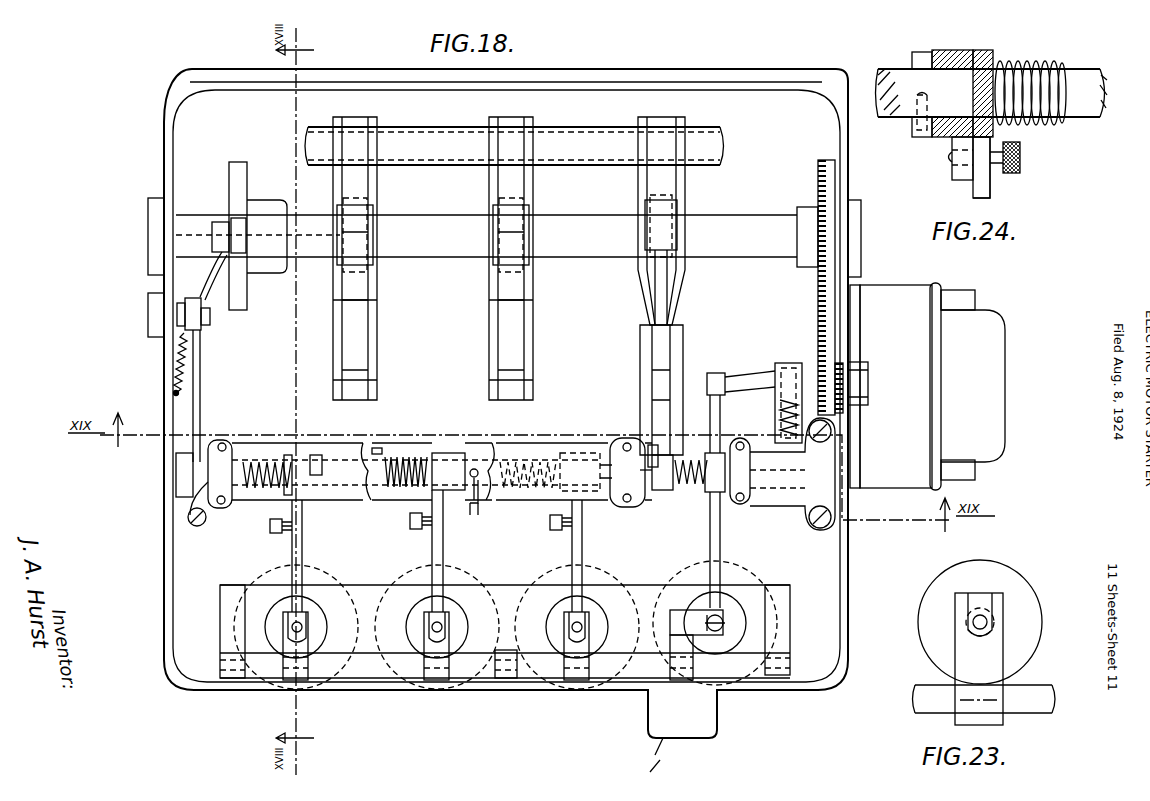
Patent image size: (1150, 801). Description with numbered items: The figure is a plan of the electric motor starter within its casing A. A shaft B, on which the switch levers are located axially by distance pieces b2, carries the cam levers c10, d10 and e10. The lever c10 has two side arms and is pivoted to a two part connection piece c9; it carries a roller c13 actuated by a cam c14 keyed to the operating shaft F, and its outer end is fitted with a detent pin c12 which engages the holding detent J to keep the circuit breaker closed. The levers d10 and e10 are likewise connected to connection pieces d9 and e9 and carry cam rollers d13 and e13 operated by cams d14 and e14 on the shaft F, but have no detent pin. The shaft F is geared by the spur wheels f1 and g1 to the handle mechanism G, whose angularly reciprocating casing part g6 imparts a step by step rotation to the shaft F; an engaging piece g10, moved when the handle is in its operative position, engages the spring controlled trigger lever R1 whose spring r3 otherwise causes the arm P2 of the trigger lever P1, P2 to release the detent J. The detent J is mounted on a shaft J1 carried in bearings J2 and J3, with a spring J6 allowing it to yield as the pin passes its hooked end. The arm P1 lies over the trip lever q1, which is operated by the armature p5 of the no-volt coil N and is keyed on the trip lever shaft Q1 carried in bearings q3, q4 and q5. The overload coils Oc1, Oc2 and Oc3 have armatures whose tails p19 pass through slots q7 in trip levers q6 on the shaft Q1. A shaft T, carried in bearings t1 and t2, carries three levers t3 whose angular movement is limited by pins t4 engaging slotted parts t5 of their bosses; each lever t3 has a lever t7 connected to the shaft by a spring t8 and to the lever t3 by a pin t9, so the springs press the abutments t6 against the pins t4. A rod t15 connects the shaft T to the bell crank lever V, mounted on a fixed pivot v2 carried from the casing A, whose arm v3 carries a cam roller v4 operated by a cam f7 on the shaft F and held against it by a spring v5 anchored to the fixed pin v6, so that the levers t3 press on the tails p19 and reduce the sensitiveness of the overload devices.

In FIG. 18, the casing A is at (160, 119).
In FIG. 18, the shaft B is at (424, 127).
In FIG. 18, the distance pieces b2 is at (320, 127).
In FIG. 18, the cam e14 is at (362, 185).
In FIG. 18, the cam roller e13 is at (363, 232).
In FIG. 18, the cam lever e10 is at (333, 300).
In FIG. 18, the connection piece e9 is at (360, 383).
In FIG. 18, the cam d14 is at (500, 186).
In FIG. 18, the cam roller d13 is at (512, 227).
In FIG. 18, the cam lever d10 is at (527, 318).
In FIG. 18, the connection piece d9 is at (521, 381).
In FIG. 18, the lever c10 is at (678, 292).
In FIG. 18, the roller c13 is at (668, 212).
In FIG. 18, the cam c14 is at (656, 272).
In FIG. 18, the two-part connection piece c9 is at (658, 386).
In FIG. 18, the detent pin c12 is at (656, 455).
In FIG. 18, the operating shaft F is at (449, 250).
In FIG. 18, the cam f7 is at (243, 292).
In FIG. 18, the spur wheel f1 is at (822, 160).
In FIG. 18, the cam roller v4 is at (222, 236).
In FIG. 18, the arm of bell-crank lever v3 is at (198, 274).
In FIG. 18, the bell-crank lever V is at (192, 308).
In FIG. 18, the fixed pivot v2 is at (210, 318).
In FIG. 18, the spring v5 is at (176, 365).
In FIG. 18, the fixed pin v6 is at (178, 394).
In FIG. 18, the rod t15 is at (201, 380).
In FIG. 18, the bearing t1 is at (222, 510).
In FIG. 24, the bearing t1 is at (990, 182).
In FIG. 18, the shaft T is at (380, 495).
In FIG. 24, the shaft T is at (880, 80).
In FIG. 18, the spring t8 is at (262, 458).
In FIG. 24, the spring t8 is at (1046, 72).
In FIG. 18, the lever t7 is at (291, 543).
In FIG. 24, the lever t7 is at (984, 58).
In FIG. 18, the slotted part t5 is at (472, 470).
In FIG. 24, the slotted part t5 is at (922, 58).
In FIG. 18, the pin t4 is at (472, 470).
In FIG. 24, the pin t4 is at (920, 132).
In FIG. 18, the abutment t6 is at (479, 505).
In FIG. 24, the abutment t6 is at (912, 128).
In FIG. 18, the pin t9 is at (270, 527).
In FIG. 24, the pin t9 is at (1022, 156).
In FIG. 18, the bearing t2 is at (620, 506).
In FIG. 18, the lever t3 is at (303, 557).
In FIG. 24, the lever t3 is at (950, 51).
In FIG. 18, the holding detent J is at (664, 508).
In FIG. 18, the bearing J2 is at (640, 510).
In FIG. 18, the spring J6 is at (692, 462).
In FIG. 18, the shaft J1 is at (706, 492).
In FIG. 18, the bearing J3 is at (744, 506).
In FIG. 18, the arm of trigger lever P2 is at (722, 372).
In FIG. 18, the arm of trigger lever P1 is at (724, 598).
In FIG. 18, the bell crank trigger lever R1 is at (752, 378).
In FIG. 18, the spring r3 is at (779, 423).
In FIG. 18, the engaging piece g10 is at (812, 383).
In FIG. 18, the spur wheel g1 is at (858, 381).
In FIG. 18, the angularly reciprocating casing part g6 is at (993, 370).
In FIG. 18, the handle G is at (975, 297).
In FIG. 18, the trip lever q6 is at (305, 645).
In FIG. 23, the trip lever q6 is at (995, 650).
In FIG. 23, the slot q7 is at (983, 600).
In FIG. 23, the tail p19 is at (988, 622).
In FIG. 18, the overload coil Oc1 is at (257, 576).
In FIG. 18, the overload coil Oc2 is at (470, 576).
In FIG. 18, the overload coil Oc3 is at (556, 580).
In FIG. 18, the no-volt coil N is at (738, 578).
In FIG. 18, the trip lever q1 is at (679, 620).
In FIG. 18, the armature p5 is at (722, 622).
In FIG. 18, the trip lever shaft Q1 is at (360, 667).
In FIG. 23, the trip lever shaft Q1 is at (918, 700).
In FIG. 18, the bearing q3 is at (229, 650).
In FIG. 18, the bearing q5 is at (782, 639).
In FIG. 18, the bearing q4 is at (505, 665).